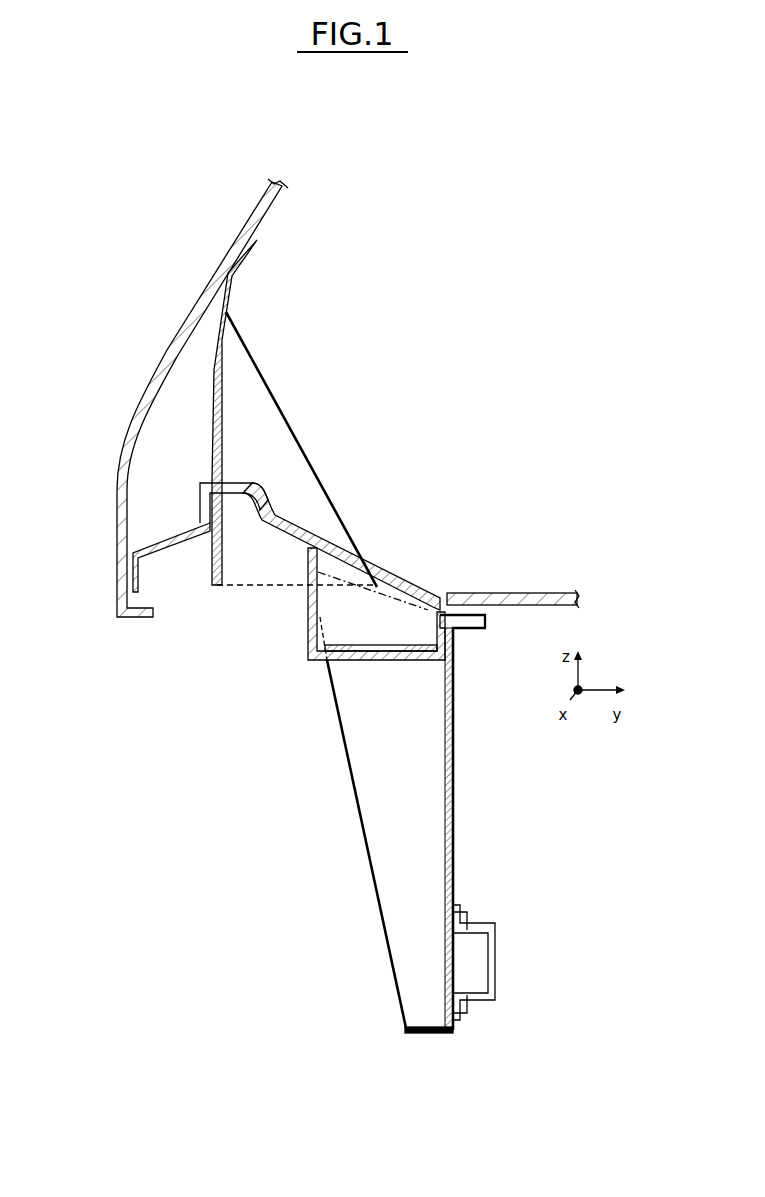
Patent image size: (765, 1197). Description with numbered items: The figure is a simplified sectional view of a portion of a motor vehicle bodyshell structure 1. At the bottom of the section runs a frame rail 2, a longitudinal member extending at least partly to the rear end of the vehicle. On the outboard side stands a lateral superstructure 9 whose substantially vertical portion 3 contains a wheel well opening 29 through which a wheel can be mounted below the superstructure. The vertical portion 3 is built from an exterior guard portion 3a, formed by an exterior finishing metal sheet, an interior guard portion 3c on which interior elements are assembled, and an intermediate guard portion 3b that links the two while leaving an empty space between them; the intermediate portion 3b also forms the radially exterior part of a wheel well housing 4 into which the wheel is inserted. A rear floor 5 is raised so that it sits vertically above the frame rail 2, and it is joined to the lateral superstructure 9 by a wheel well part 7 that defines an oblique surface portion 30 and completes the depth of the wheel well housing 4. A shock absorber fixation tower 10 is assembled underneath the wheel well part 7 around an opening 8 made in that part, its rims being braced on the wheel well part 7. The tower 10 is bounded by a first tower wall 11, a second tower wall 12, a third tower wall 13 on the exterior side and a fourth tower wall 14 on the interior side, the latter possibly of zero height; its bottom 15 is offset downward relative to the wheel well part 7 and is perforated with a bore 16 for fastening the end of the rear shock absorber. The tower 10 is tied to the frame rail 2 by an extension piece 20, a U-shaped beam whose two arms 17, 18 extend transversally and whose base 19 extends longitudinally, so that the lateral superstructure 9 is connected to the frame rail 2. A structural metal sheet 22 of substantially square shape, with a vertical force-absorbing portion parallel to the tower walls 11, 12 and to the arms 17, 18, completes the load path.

The motor vehicle bodyshell structure 1 is at (221, 203).
The frame rail 2 is at (497, 963).
The substantially vertical portion 3 is at (118, 665).
The exterior guard portion 3a is at (166, 351).
The intermediate guard portion 3b is at (168, 540).
The interior guard portion 3c is at (211, 422).
The wheel well housing 4 is at (197, 598).
The rear floor 5 is at (527, 593).
The wheel well part 7 is at (262, 512).
The opening 8 is at (329, 550).
The lateral superstructure 9 is at (117, 715).
The shock absorber fixation tower 10 is at (380, 597).
The first tower wall 11 is at (352, 583).
The second tower wall 12 is at (419, 629).
The third tower wall 13 is at (310, 628).
The fourth tower wall 14 is at (456, 646).
The bottom 15 is at (342, 648).
The bore 16 is at (379, 660).
The first arm 17 is at (382, 890).
The second arm 18 is at (382, 890).
The base 19 is at (455, 826).
The extension piece 20 is at (423, 768).
The structural metal sheet 22 is at (276, 398).
The wheel well opening 29 is at (108, 655).
The oblique surface portion 30 is at (298, 540).